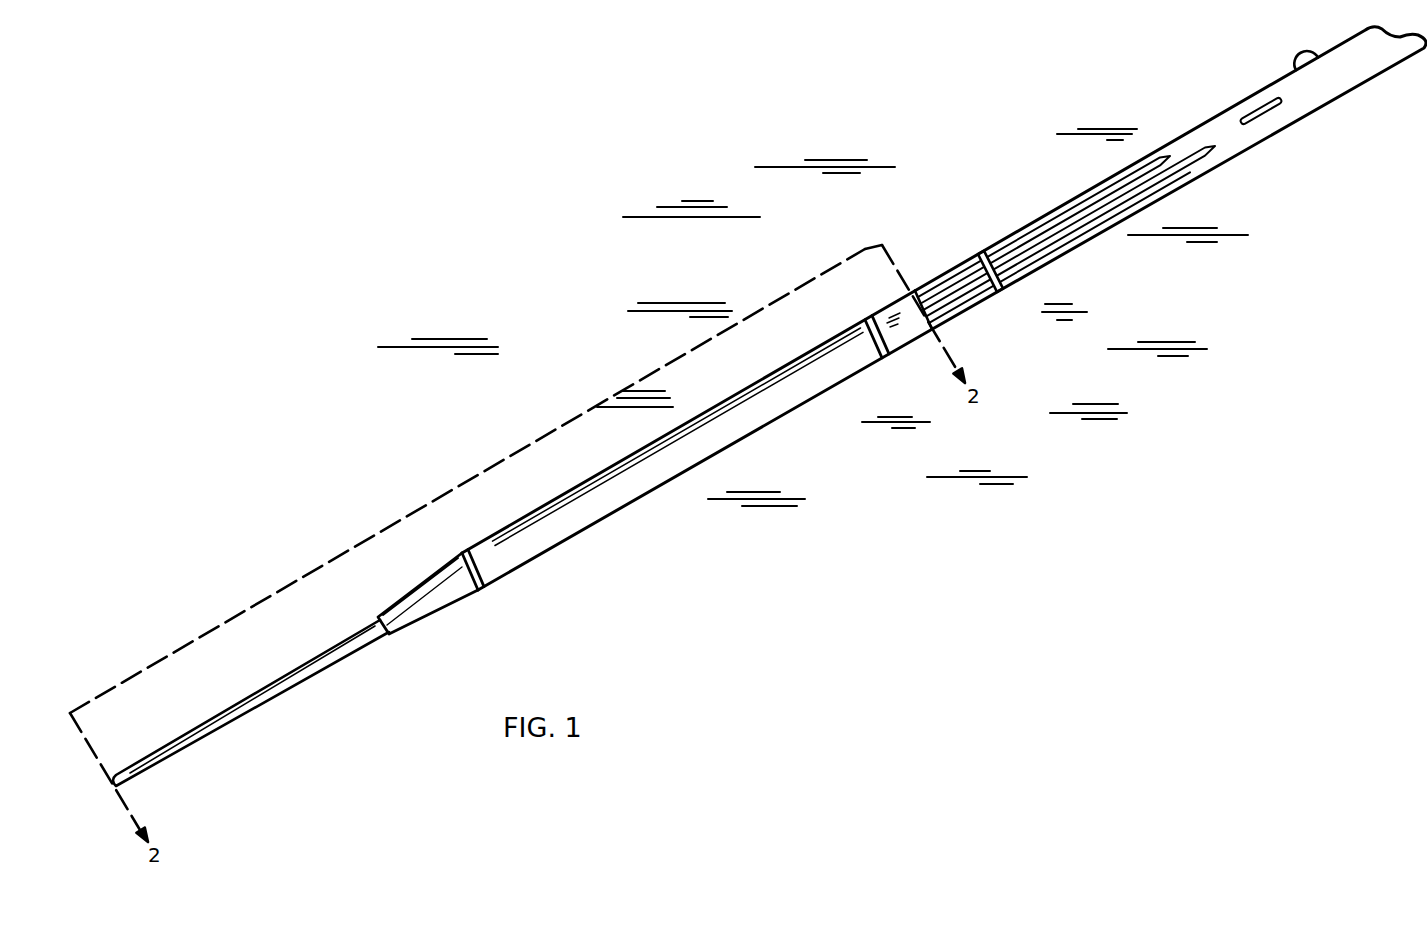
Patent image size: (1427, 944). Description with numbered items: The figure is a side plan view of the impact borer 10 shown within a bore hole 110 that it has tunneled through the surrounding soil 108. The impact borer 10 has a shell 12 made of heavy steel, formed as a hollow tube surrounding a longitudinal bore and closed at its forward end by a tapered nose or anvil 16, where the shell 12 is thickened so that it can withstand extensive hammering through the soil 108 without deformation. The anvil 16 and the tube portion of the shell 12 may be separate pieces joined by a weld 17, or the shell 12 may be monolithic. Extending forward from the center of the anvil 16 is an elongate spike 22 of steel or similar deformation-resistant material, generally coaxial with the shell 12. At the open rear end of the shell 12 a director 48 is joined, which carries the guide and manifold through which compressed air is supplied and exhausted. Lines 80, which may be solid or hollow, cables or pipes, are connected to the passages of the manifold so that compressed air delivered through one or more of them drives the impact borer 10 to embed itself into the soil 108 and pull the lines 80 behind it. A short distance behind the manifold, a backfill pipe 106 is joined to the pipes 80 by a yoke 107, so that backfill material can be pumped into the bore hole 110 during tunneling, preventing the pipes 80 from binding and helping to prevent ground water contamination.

The impact borer 10 is at (667, 532).
The shell 12 is at (782, 415).
The tapered nose or anvil 16 is at (433, 608).
The weld 17 is at (463, 550).
The elongate spike 22 is at (250, 715).
The director 48 is at (881, 310).
The lines or pipes 80 is at (1262, 114).
The backfill pipe 106 is at (1181, 153).
The yoke 107 is at (983, 255).
The soil 108 is at (575, 274).
The bore hole 110 is at (1297, 71).